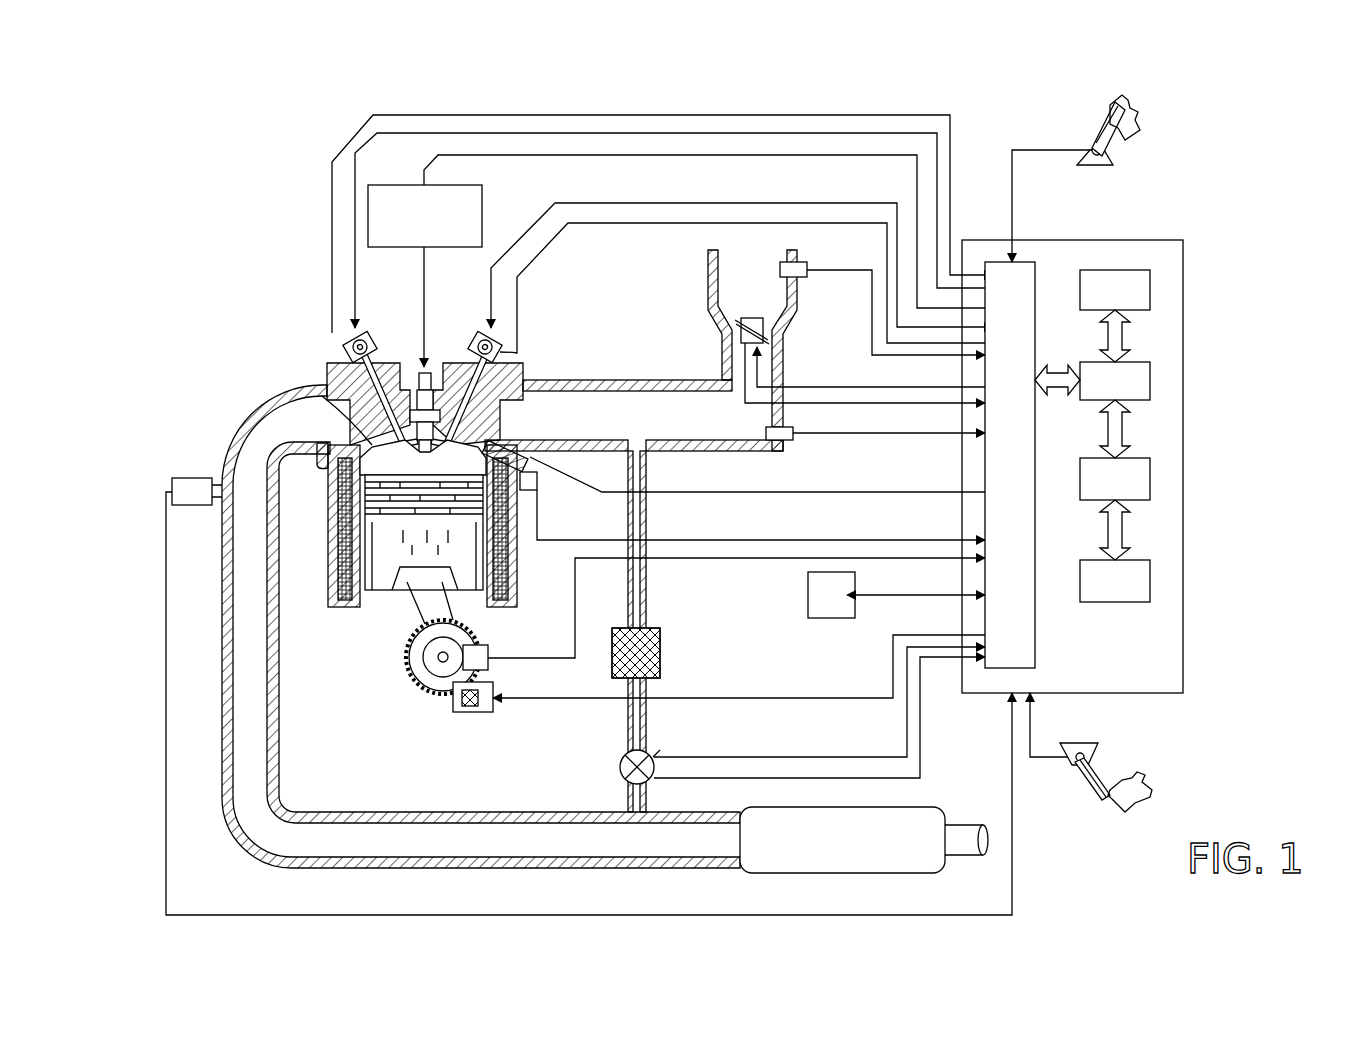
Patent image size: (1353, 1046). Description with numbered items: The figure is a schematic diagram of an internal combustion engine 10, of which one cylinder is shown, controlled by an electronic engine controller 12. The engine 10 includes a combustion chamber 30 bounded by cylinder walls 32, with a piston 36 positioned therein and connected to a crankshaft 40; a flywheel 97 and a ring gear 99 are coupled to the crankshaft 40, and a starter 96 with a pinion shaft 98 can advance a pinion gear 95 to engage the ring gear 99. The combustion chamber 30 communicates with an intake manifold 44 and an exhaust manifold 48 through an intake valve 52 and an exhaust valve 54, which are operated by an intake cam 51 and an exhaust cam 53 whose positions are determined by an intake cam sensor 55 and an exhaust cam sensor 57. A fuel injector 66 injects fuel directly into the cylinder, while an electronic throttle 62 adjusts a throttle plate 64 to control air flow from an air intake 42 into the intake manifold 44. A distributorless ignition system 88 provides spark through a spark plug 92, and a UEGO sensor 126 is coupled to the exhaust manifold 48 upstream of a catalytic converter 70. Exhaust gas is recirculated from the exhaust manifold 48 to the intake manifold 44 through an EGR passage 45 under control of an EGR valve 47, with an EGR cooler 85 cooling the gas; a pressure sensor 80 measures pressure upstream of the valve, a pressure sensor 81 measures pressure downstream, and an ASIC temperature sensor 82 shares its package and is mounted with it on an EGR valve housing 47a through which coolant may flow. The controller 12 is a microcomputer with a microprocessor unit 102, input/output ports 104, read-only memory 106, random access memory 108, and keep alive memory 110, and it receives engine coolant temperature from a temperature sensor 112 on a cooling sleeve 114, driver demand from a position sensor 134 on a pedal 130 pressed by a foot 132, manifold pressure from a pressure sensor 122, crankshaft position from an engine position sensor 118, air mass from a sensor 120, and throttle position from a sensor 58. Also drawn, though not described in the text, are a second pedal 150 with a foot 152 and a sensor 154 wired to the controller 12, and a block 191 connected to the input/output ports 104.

The internal combustion engine 10 is at (265, 318).
The electronic engine controller 12 is at (1185, 240).
The combustion chamber 30 is at (420, 462).
The cylinder walls 32 is at (367, 608).
The piston 36 is at (405, 590).
The crankshaft 40 is at (430, 682).
The air intake 42 is at (759, 292).
The intake manifold 44 is at (700, 427).
The EGR passage 45 is at (648, 575).
The EGR valve 47 is at (620, 777).
The EGR valve housing 47a is at (620, 762).
The exhaust manifold 48 is at (306, 434).
The intake cam 51 is at (478, 332).
The intake valve 52 is at (470, 427).
The exhaust cam 53 is at (368, 332).
The exhaust valve 54 is at (332, 395).
The intake cam sensor 55 is at (498, 354).
The exhaust cam sensor 57 is at (352, 352).
The throttle position sensor 58 is at (722, 362).
The electronic throttle 62 is at (768, 333).
The throttle plate 64 is at (735, 325).
The fuel injector 66 is at (530, 472).
The catalytic converter 70 is at (905, 807).
The pressure sensor 80 is at (655, 780).
The pressure sensor 81 is at (652, 752).
The ASIC temperature sensor 82 is at (668, 752).
The EGR cooler 85 is at (660, 632).
The distributorless ignition system 88 is at (372, 185).
The spark plug 92 is at (430, 372).
The pinion gear 95 is at (476, 708).
The starter 96 is at (490, 710).
The flywheel 97 is at (414, 668).
The pinion shaft 98 is at (466, 705).
The ring gear 99 is at (432, 690).
The microprocessor unit 102 is at (1152, 378).
The input/output ports 104 is at (1036, 270).
The read-only memory 106 is at (1150, 285).
The random access memory 108 is at (1152, 480).
The keep alive memory 110 is at (1152, 580).
The temperature sensor 112 is at (538, 490).
The cooling sleeve 114 is at (505, 575).
The engine position sensor 118 is at (488, 648).
The air mass sensor 120 is at (798, 262).
The pressure sensor 122 is at (782, 440).
The Universal Exhaust Gas Oxygen (UEGO) sensor 126 is at (172, 480).
The driver demand pedal 130 is at (1090, 135).
The foot 132 is at (1140, 112).
The position sensor 134 is at (1105, 155).
The brake pedal 150 is at (1098, 800).
The foot 152 is at (1132, 775).
The brake pedal position sensor 154 is at (1068, 752).
The display/actuator 191 is at (896, 595).